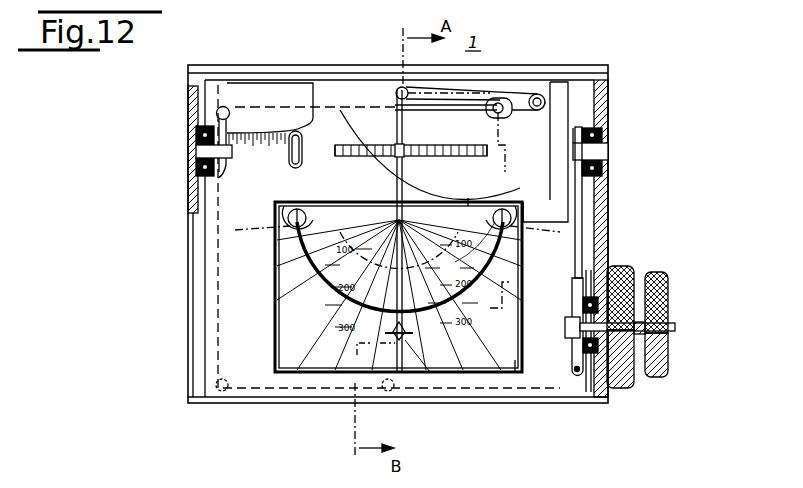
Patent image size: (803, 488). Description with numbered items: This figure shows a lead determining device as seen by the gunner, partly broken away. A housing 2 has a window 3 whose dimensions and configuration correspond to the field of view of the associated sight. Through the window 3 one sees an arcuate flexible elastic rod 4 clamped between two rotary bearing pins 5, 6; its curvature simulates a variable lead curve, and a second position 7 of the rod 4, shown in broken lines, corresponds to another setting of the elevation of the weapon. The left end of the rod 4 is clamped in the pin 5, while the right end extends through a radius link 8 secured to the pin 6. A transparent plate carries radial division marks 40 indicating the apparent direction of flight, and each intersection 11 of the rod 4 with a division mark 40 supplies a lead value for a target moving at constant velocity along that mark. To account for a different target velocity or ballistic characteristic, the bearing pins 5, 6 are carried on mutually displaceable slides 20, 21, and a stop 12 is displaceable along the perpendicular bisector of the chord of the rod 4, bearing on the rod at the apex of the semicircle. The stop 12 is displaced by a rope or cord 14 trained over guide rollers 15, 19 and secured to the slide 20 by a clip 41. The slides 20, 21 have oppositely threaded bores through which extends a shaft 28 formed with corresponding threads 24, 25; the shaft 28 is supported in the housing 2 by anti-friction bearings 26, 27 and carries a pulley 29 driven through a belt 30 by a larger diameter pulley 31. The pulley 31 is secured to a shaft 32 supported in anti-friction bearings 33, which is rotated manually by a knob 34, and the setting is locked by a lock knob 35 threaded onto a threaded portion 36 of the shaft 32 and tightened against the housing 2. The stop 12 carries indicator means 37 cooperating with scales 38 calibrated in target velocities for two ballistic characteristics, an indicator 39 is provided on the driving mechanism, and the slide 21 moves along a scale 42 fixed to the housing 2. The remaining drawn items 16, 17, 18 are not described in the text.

The housing 2 is at (603, 104).
The window 3 is at (305, 372).
The arcuate flexible elastic rod 4 is at (298, 262).
The rotary bearing pin 5 is at (286, 214).
The rotary bearing pin 6 is at (468, 198).
The second position of rod 7 is at (500, 262).
The radius link 8 is at (512, 222).
The intersection 11 is at (300, 290).
The stop 12 is at (417, 372).
The rope or cord 14 is at (330, 392).
The guide roller 15 is at (397, 88).
The lever 16 is at (537, 93).
The rod 17 is at (223, 106).
The mounting hole 18 is at (222, 391).
The guide roller 19 is at (388, 391).
The slide 20 is at (566, 88).
The slide 21 is at (300, 92).
The thread 24 is at (368, 156).
The thread 25 is at (452, 157).
The anti-friction bearing 26 is at (196, 148).
The anti-friction bearing 27 is at (605, 150).
The shaft 28 is at (382, 146).
The pulley 29 is at (578, 128).
The belt 30 is at (583, 222).
The pulley 31 is at (572, 352).
The shaft 32 is at (563, 325).
The anti-friction bearings 33 is at (588, 355).
The knob 34 is at (660, 378).
The lock knob 35 is at (622, 384).
The threaded portion 36 is at (634, 272).
The indicator means 37 is at (385, 336).
The scales 38 is at (330, 340).
The indicator 39 is at (300, 131).
The radial division marks 40 is at (505, 372).
The clip 41 is at (504, 116).
The scale 42 is at (272, 130).